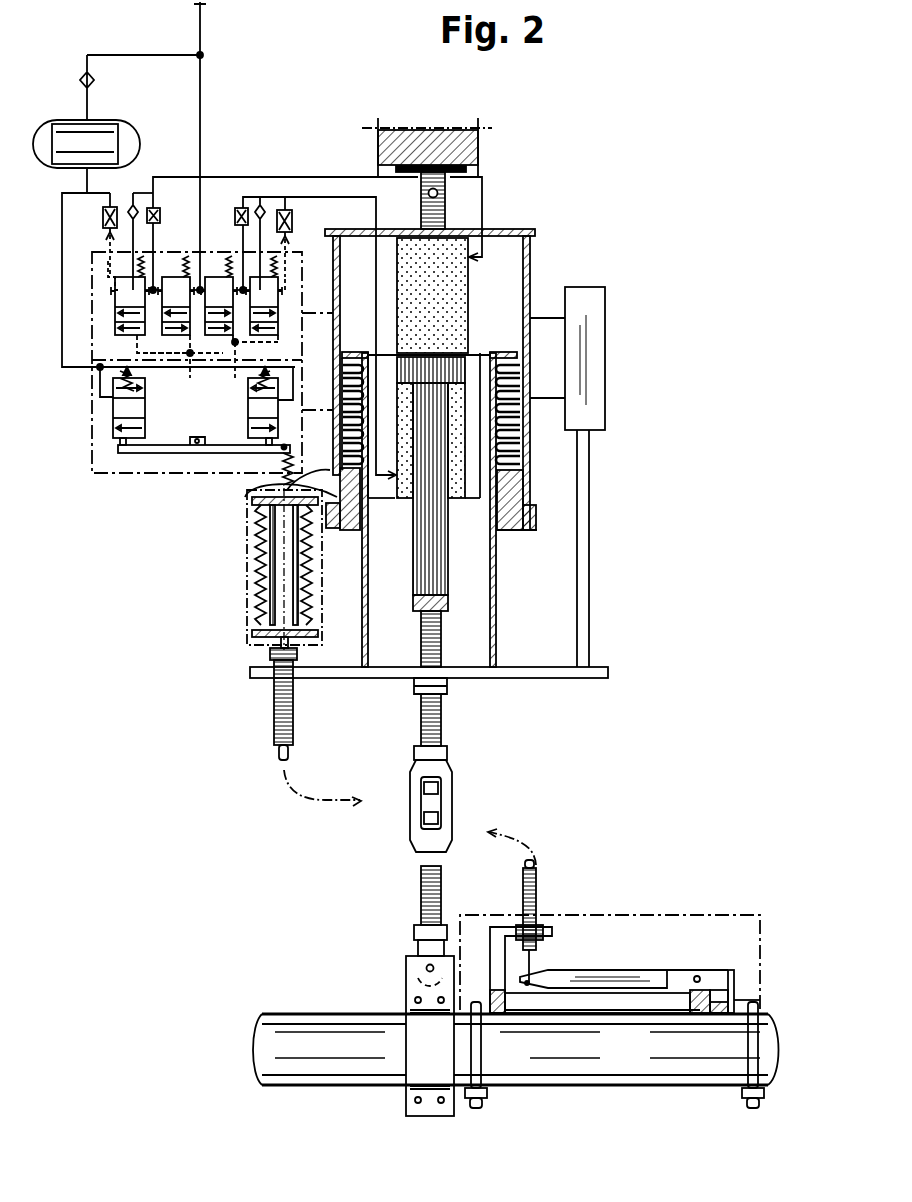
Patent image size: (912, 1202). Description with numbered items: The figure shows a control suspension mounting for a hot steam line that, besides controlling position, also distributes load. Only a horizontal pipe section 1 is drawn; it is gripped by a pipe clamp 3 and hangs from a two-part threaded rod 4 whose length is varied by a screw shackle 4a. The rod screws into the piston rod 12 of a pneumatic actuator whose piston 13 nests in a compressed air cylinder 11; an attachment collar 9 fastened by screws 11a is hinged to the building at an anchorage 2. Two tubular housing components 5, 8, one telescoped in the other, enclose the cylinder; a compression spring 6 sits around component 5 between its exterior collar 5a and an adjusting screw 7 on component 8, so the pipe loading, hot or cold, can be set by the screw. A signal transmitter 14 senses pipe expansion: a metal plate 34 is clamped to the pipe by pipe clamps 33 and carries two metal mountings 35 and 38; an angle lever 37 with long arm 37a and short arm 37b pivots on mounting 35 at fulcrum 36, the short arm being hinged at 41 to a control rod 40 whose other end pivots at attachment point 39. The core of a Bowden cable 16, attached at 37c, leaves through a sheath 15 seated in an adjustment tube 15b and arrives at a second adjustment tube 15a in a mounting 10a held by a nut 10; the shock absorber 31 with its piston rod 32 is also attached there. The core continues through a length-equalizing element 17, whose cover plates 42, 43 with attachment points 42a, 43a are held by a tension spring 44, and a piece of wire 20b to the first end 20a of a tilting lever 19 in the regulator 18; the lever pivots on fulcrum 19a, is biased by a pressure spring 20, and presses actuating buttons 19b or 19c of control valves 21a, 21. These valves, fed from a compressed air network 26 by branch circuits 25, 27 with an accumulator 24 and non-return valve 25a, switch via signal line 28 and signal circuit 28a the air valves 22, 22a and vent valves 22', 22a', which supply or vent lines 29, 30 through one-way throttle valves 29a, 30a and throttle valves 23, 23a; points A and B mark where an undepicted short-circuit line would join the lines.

The horizontal pipe section 1 is at (600, 1072).
The anchorage 2 is at (440, 195).
The pipe clamp 3 is at (416, 1105).
The threaded rod 4 is at (442, 728).
The screw shackle 4a is at (452, 796).
The tubular housing component 5 is at (496, 612).
The cylinder head 5a is at (495, 353).
The compression spring 6 is at (518, 448).
The adjusting screw 7 is at (532, 528).
The tubular housing component 8 is at (528, 268).
The attachment collar 9 is at (436, 215).
The nut 10 is at (446, 690).
The mounting 10a is at (376, 678).
The compressed air cylinder 11 is at (455, 300).
The screws 11a is at (410, 236).
The piston rod 12 is at (448, 560).
The piston 13 is at (470, 368).
The signal transmitter 14 is at (657, 914).
The sheath 15 is at (536, 872).
The second adjustment tube 15a is at (276, 690).
The adjustment tube 15b is at (540, 925).
The Bowden cable 16 is at (528, 845).
The length-equalizing element 17 is at (247, 555).
The regulator 18 is at (92, 405).
The tilting lever 19 is at (137, 455).
The fulcrum 19a is at (195, 460).
The actuating button 19b is at (118, 449).
The actuating button 19c is at (286, 447).
The pressure spring 20 is at (210, 468).
The first end of tilting lever 20a is at (292, 447).
The piece of wire 20b is at (335, 530).
The pneumatic control valve 21 is at (248, 415).
The pneumatic control valve 21a is at (145, 415).
The air valve 22 is at (169, 277).
The air valve 22a is at (215, 277).
The vent valve 22' is at (284, 291).
The vent valve 22a' is at (104, 277).
The throttle valve 23 is at (292, 221).
The throttle valve 23a is at (90, 235).
The compressed air accumulator 24 is at (56, 121).
The branch circuit 25 is at (141, 55).
The non-return valve 25a is at (80, 82).
The compressed air network 26 is at (200, 32).
The branch circuit 27 is at (62, 322).
The signal line 28 is at (258, 376).
The signal circuit 28a is at (130, 376).
The line 29 is at (274, 177).
The one-way throttle valve 29a is at (156, 215).
The line 30 is at (300, 197).
The one-way throttle valve 30a is at (236, 215).
The shock absorber 31 is at (592, 368).
The piston rod of shock absorber 32 is at (589, 490).
The pipe clamps 33 is at (484, 1075).
The metal plate 34 is at (663, 1012).
The metal mounting 35 is at (731, 980).
The fulcrum 36 is at (694, 976).
The angle lever 37 is at (703, 990).
The long arm 37a is at (617, 972).
The short arm 37b is at (736, 985).
The connection point 37c is at (538, 978).
The metal mounting 38 is at (495, 960).
The attachment point 39 is at (500, 1003).
The control rod 40 is at (570, 1010).
The hinge 41 is at (728, 1000).
The cover plate 42 is at (262, 500).
The attachment point 42a is at (272, 497).
The cover plate 43 is at (256, 633).
The attachment point 43a is at (278, 642).
The tension spring 44 is at (312, 595).
The short-circuit connection point A is at (155, 240).
The short-circuit connection point B is at (247, 242).